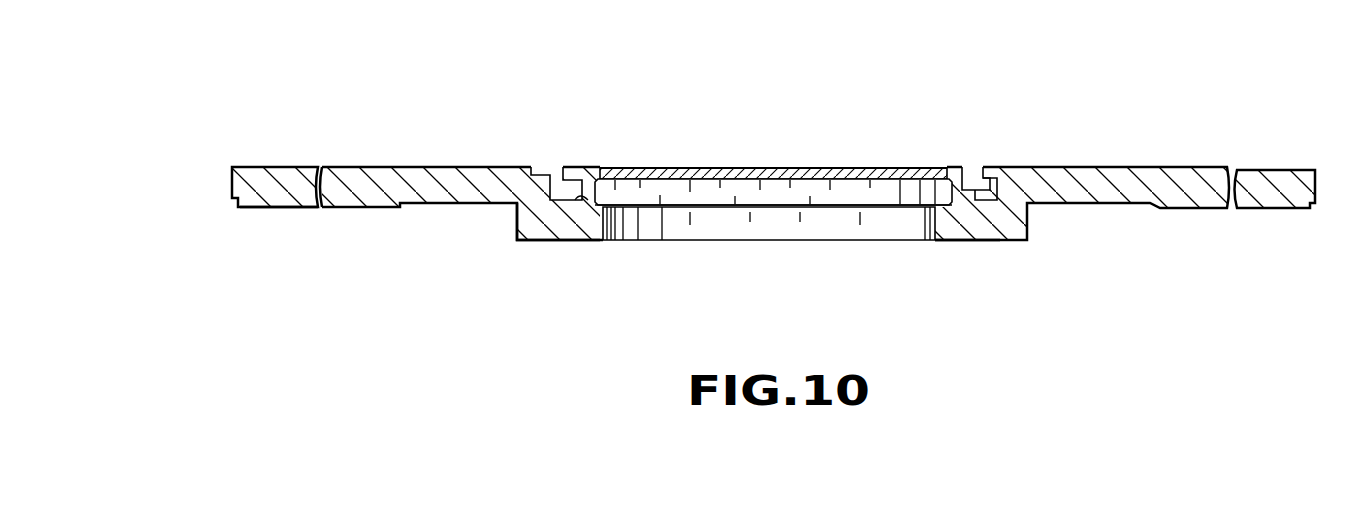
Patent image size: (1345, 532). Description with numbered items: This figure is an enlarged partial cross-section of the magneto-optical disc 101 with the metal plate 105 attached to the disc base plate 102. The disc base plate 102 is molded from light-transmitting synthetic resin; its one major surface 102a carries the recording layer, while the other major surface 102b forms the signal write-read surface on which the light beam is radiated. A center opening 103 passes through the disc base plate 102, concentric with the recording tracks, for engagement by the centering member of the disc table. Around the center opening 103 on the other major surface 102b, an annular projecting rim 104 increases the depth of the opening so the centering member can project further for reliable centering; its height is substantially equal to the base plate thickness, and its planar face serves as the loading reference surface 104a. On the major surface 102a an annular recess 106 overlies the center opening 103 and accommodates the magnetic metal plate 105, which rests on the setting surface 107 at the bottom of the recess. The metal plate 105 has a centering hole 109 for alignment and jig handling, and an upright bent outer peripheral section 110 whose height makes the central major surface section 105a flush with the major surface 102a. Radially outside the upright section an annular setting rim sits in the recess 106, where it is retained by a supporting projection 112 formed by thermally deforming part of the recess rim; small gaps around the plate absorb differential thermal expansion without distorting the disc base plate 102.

The magneto-optical disc 101 is at (1059, 118).
The disc base plate 102 is at (255, 183).
The one major surface 102a is at (305, 168).
The other major surface 102b is at (297, 208).
The center opening 103 is at (927, 228).
The annular projecting rim 104 is at (1013, 230).
The loading reference surface 104a is at (553, 243).
The metal plate 105 is at (888, 169).
The central major surface section 105a is at (706, 170).
The annular recess 106 is at (992, 179).
The setting surface 107 is at (590, 238).
The centering hole 109 is at (800, 173).
The upright bent outer peripheral section 110 is at (960, 178).
The supporting projection 112 is at (557, 173).